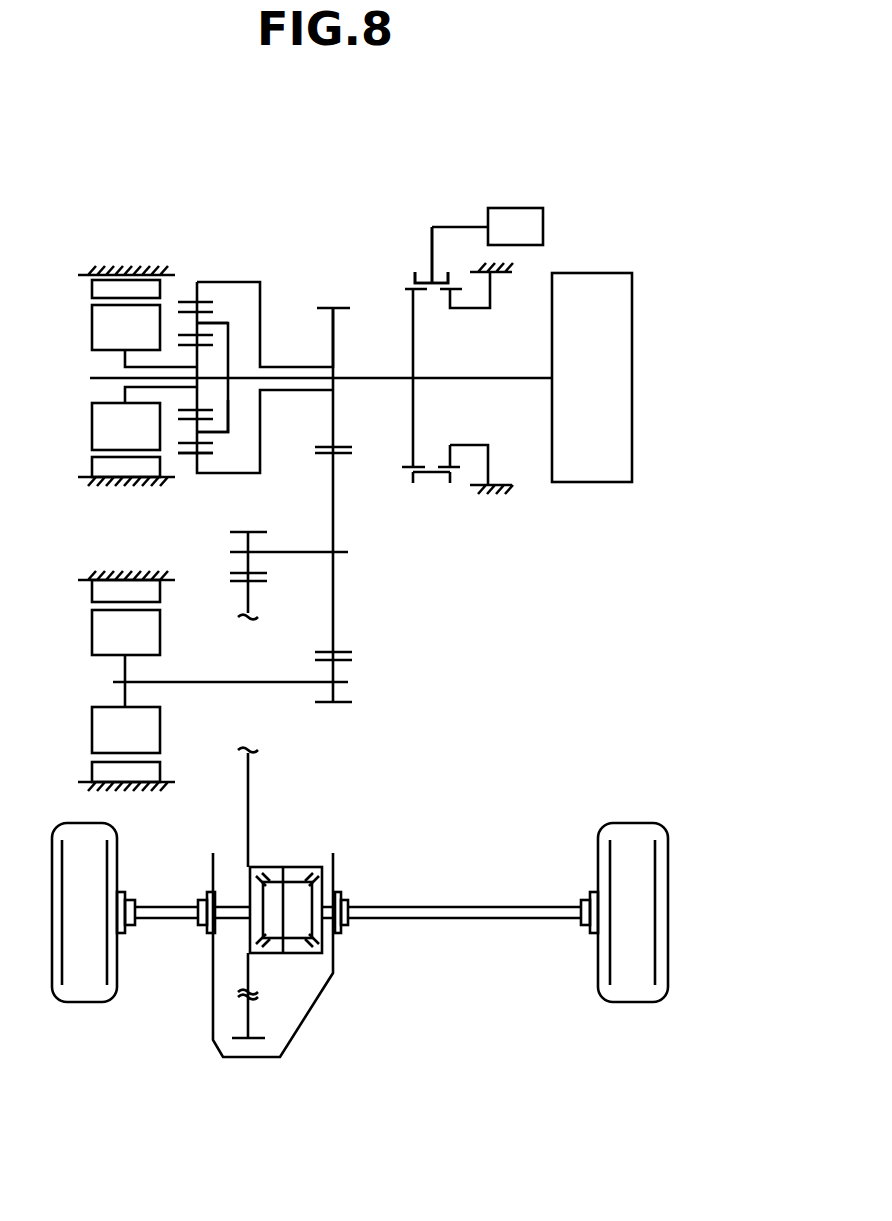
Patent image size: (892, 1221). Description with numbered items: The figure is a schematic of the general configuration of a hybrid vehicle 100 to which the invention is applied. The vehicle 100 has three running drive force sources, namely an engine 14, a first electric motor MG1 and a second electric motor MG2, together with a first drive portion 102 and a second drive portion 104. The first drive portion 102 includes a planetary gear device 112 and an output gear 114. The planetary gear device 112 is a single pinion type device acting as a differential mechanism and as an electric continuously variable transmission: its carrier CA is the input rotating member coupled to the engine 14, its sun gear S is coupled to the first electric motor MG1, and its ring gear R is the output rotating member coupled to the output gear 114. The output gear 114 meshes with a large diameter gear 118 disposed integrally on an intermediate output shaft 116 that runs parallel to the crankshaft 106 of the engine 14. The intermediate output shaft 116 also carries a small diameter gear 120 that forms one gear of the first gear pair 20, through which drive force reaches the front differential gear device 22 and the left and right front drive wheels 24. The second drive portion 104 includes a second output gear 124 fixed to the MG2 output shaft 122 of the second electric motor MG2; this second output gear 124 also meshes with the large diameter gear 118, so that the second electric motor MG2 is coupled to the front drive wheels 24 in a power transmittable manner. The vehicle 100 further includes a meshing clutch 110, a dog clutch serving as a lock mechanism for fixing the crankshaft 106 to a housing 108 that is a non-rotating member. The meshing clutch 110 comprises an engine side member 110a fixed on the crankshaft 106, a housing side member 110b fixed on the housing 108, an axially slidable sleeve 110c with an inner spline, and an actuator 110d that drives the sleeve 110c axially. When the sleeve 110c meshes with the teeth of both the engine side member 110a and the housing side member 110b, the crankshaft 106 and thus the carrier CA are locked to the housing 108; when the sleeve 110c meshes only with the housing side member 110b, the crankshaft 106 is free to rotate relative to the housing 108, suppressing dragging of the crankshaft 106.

The hybrid vehicle 100 is at (481, 146).
The meshing clutch 110 is at (474, 312).
The engine side member 110a is at (403, 290).
The housing side member 110b is at (445, 295).
The sleeve 110c is at (415, 273).
The actuator 110d is at (540, 229).
The housing 108 is at (478, 268).
The first drive portion 102 is at (390, 488).
The crankshaft 106 is at (495, 380).
The engine 14 is at (587, 478).
The planetary gear device 112 is at (200, 265).
The sun gear S is at (200, 409).
The carrier CA is at (217, 433).
The ring gear R is at (187, 457).
The first electric motor MG1 is at (137, 376).
The second electric motor MG2 is at (126, 681).
The output gear 114 is at (345, 445).
The large diameter gear 118 is at (320, 456).
The intermediate output shaft 116 is at (292, 556).
The small diameter gear 120 is at (255, 537).
The first gear pair 20 is at (221, 576).
The second output gear 124 is at (342, 666).
The MG2 output shaft 122 is at (202, 686).
The second drive portion 104 is at (376, 694).
The front differential gear device 22 is at (353, 956).
The front drive wheels 24 is at (87, 992).